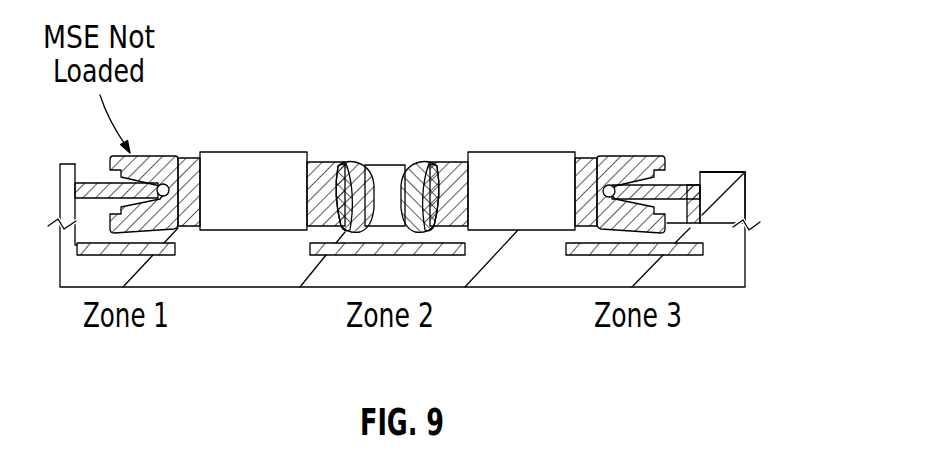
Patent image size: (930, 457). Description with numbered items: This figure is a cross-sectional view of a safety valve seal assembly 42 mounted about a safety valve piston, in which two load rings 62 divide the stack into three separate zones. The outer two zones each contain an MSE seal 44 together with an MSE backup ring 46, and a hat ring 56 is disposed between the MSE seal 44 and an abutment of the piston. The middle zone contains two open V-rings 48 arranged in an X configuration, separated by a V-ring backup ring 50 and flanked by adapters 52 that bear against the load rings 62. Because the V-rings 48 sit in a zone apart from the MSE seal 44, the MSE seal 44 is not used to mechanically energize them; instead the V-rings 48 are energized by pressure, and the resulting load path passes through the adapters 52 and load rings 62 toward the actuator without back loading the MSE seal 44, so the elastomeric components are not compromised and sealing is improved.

The seal assembly 42 is at (755, 83).
The MSE seal 44 is at (162, 155).
The MSE backup ring 46 is at (190, 158).
The V-rings 48 is at (352, 165).
The V-ring backup ring 50 is at (365, 165).
The adapter 52 is at (312, 163).
The hat ring 56 is at (684, 182).
The load rings 62 is at (275, 170).